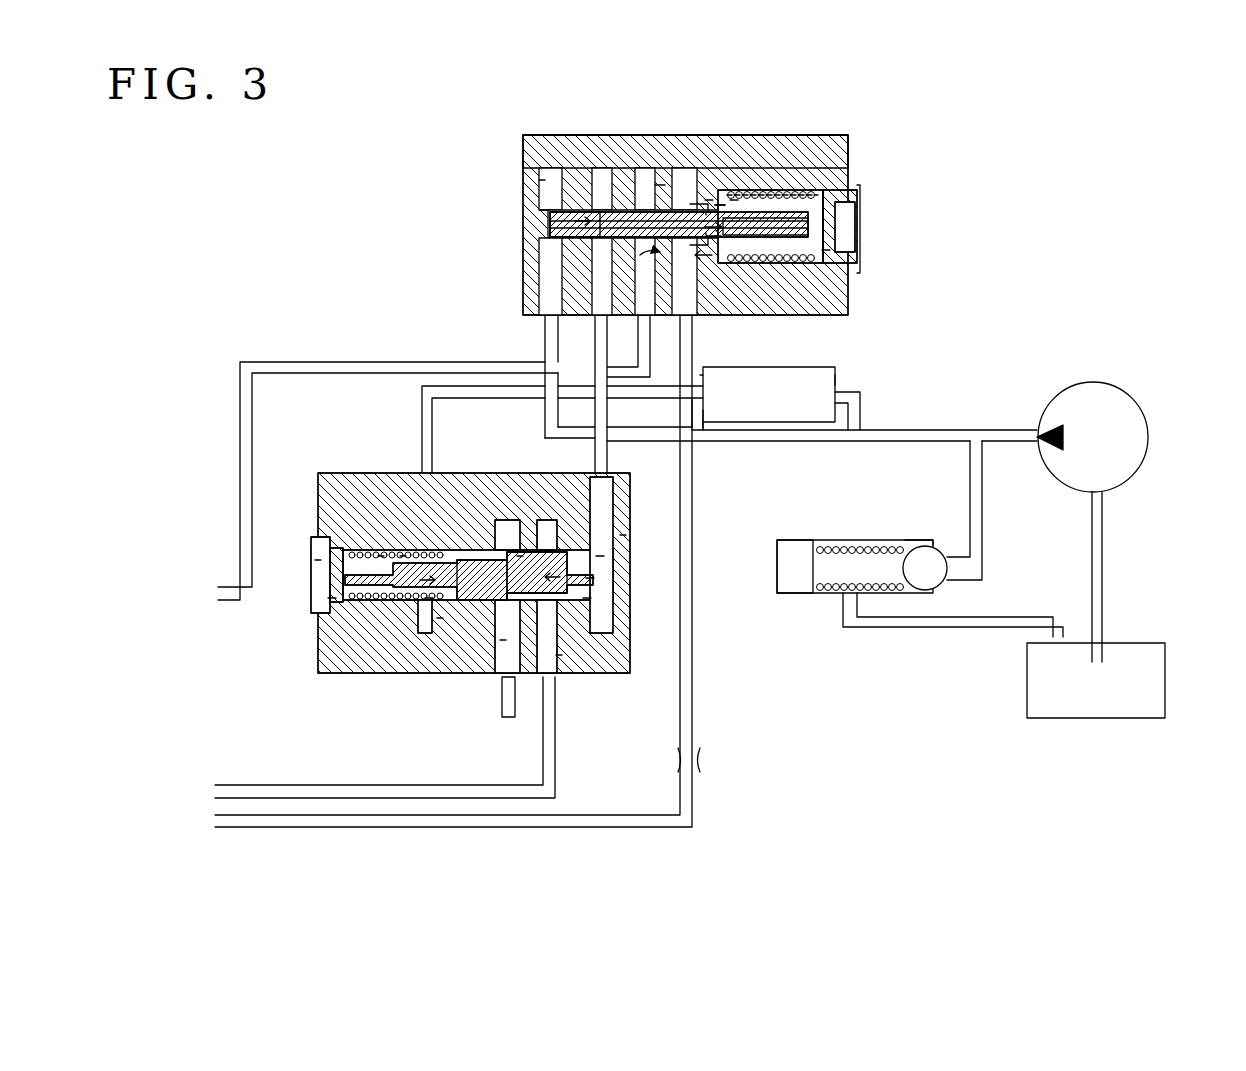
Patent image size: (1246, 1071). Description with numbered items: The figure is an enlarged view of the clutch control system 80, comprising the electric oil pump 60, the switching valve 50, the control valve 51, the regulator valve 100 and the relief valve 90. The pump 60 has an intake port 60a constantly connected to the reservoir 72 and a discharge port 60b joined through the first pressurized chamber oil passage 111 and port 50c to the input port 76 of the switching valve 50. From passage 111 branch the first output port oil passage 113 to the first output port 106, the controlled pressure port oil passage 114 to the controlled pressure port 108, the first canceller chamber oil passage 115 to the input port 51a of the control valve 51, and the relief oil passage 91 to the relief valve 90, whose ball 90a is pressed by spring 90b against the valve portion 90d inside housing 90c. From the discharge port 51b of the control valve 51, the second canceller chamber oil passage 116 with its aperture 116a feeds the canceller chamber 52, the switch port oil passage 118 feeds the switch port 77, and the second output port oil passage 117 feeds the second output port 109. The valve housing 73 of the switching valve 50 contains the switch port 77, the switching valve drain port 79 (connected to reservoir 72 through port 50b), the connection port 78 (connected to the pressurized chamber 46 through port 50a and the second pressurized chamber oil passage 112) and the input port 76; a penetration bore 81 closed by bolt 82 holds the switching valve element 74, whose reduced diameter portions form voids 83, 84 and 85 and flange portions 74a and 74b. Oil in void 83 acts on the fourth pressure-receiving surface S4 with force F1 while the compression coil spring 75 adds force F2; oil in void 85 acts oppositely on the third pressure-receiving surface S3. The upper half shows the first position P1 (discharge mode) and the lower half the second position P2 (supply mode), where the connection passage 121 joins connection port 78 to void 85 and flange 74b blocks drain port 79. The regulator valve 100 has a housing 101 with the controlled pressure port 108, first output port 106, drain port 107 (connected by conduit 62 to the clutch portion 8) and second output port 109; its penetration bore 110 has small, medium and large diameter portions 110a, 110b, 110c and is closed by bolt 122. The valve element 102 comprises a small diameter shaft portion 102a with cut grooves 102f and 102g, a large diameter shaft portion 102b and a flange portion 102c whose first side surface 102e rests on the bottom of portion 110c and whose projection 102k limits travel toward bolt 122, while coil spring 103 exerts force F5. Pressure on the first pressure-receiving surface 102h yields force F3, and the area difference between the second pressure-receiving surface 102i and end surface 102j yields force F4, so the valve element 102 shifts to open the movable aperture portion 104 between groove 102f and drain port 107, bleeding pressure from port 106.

The regulator valve 100 is at (928, 190).
The housing 101 is at (845, 140).
The valve element 102 is at (605, 210).
The small diameter shaft portion 102a is at (555, 175).
The large diameter shaft portion 102b is at (710, 200).
The flange portion 102c is at (770, 190).
The first side surface 102e is at (735, 195).
The cut groove 102f is at (545, 240).
The cut groove 102g is at (705, 300).
The first pressure-receiving surface 102h is at (595, 245).
The second pressure-receiving surface 102i is at (720, 200).
The end surface 102j is at (660, 180).
The projection 102k is at (860, 235).
The coil spring 103 is at (790, 190).
The movable aperture portion 104 is at (645, 250).
The first output port 106 is at (598, 175).
The drain port 107 is at (642, 175).
The controlled pressure port 108 is at (545, 182).
The second output port 109 is at (684, 175).
The penetration bore 110 is at (548, 232).
The small diameter portion 110a is at (575, 224).
The medium diameter portion 110b is at (790, 290).
The large diameter portion 110c is at (838, 192).
The first pressurized chamber oil passage 111 is at (595, 452).
The second pressurized chamber oil passage 112 is at (557, 770).
The first output port oil passage 113 is at (558, 350).
The controlled pressure port oil passage 114 is at (600, 345).
The first canceller chamber oil passage 115 is at (862, 410).
The second canceller chamber oil passage 116 is at (692, 650).
The aperture 116a is at (697, 760).
The second output port oil passage 117 is at (697, 350).
The switch port oil passage 118 is at (425, 390).
The connection passage 121 is at (585, 600).
The bolt 122 is at (858, 215).
The clutch portion 8 is at (207, 595).
The pressurized chamber 46 is at (207, 790).
The switching valve 50 is at (215, 665).
The port 50a is at (545, 680).
The port 50b is at (520, 690).
The port 50c is at (612, 478).
The control valve 51 is at (840, 365).
The input port 51a is at (845, 380).
The discharge port 51b is at (703, 420).
The canceller chamber 52 is at (207, 818).
The electric oil pump 60 is at (1093, 378).
The intake port 60a is at (1120, 485).
The discharge port 60b is at (1037, 437).
The conduit 62 is at (352, 362).
The reservoir 72 is at (1080, 720).
The valve housing 73 is at (380, 558).
The switching valve element 74 is at (380, 587).
The flange portion 74a is at (470, 585).
The flange portion 74b is at (580, 630).
The compression coil spring 75 is at (405, 558).
The input port 76 is at (622, 505).
The switch port 77 is at (430, 600).
The connection port 78 is at (560, 655).
The switching valve drain port 79 is at (505, 640).
The clutch control system 80 is at (1052, 190).
The penetration bore 81 is at (345, 555).
The bolt 82 is at (340, 585).
The void 83 is at (440, 552).
The void 84 is at (440, 620).
The void 85 is at (590, 580).
The relief valve 90 is at (884, 642).
The ball 90a is at (937, 582).
The spring 90b is at (832, 595).
The housing 90c is at (838, 545).
The valve portion 90d is at (942, 590).
The relief oil passage 91 is at (970, 492).
The biasing force F1 is at (318, 560).
The biasing force F2 is at (520, 558).
The biasing force F3 is at (540, 210).
The biasing force F4 is at (830, 250).
The biasing force F5 is at (751, 359).
The third pressure-receiving surface S3 is at (600, 558).
The fourth pressure-receiving surface S4 is at (330, 598).
The first position P1 is at (395, 535).
The second position P2 is at (420, 600).